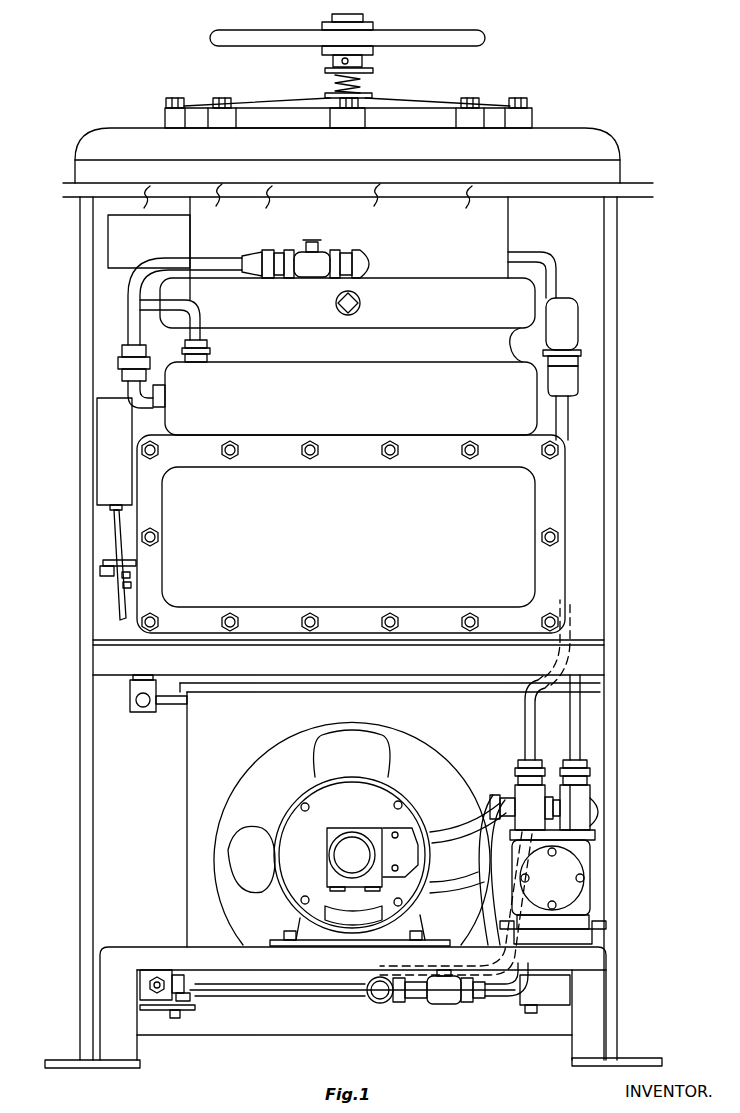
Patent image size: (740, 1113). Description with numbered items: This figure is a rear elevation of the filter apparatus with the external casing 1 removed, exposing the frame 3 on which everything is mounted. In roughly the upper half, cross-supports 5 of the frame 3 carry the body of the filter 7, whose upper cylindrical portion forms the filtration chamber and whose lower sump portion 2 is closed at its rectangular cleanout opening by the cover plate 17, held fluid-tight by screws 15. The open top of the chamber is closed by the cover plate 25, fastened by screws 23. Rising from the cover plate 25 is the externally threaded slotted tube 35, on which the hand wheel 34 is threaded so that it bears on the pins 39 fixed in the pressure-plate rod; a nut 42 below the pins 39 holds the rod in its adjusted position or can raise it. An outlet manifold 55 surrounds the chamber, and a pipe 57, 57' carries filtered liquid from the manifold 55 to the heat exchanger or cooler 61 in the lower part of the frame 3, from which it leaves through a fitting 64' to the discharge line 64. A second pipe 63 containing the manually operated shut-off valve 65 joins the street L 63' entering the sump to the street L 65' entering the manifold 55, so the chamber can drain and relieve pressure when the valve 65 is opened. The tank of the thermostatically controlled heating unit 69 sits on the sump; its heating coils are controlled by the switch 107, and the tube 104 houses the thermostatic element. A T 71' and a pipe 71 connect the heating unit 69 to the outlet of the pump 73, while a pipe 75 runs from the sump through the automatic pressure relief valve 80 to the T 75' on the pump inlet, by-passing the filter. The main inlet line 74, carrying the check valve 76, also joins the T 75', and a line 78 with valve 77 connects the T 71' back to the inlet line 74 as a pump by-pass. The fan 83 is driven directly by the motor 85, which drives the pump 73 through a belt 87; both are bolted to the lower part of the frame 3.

The external casing 1 is at (85, 170).
The lower tank body 2 is at (351, 388).
The frame 3 is at (212, 968).
The cross-supports 5 is at (474, 672).
The body of the filter 7 is at (362, 462).
The screws 15 is at (302, 450).
The cover plate 17 is at (320, 525).
The screws 23 is at (170, 100).
The cover plate 25 is at (262, 102).
The hand wheel 34 is at (488, 38).
The slotted tube 35 is at (362, 86).
The pins 39 is at (363, 60).
The nut 42 is at (325, 70).
The outlet manifold 55 is at (347, 320).
The pipe 57 is at (540, 265).
The pipe 57' is at (156, 708).
The heat exchanger or cooler 61 is at (254, 728).
The second pipe 63 is at (180, 306).
The street L 63' is at (168, 400).
The discharge line 64 is at (149, 994).
The fitting 64' is at (169, 961).
The shut-off valve 65 is at (297, 249).
The street L 65' is at (377, 260).
The heating unit 69 is at (175, 331).
The pipe 71 is at (610, 730).
The T 71' is at (612, 796).
The pump 73 is at (553, 926).
The main inlet line 74 is at (474, 872).
The pipe 75 is at (582, 692).
The T 75' is at (536, 797).
The check valve 76 is at (400, 998).
The valve 77 is at (598, 805).
The line 78 is at (390, 960).
The automatic pressure relief valve 80 is at (580, 340).
The fan 83 is at (360, 766).
The motor 85 is at (338, 820).
The belt 87 is at (448, 826).
The tube 104 is at (114, 542).
The switch 107 is at (97, 458).